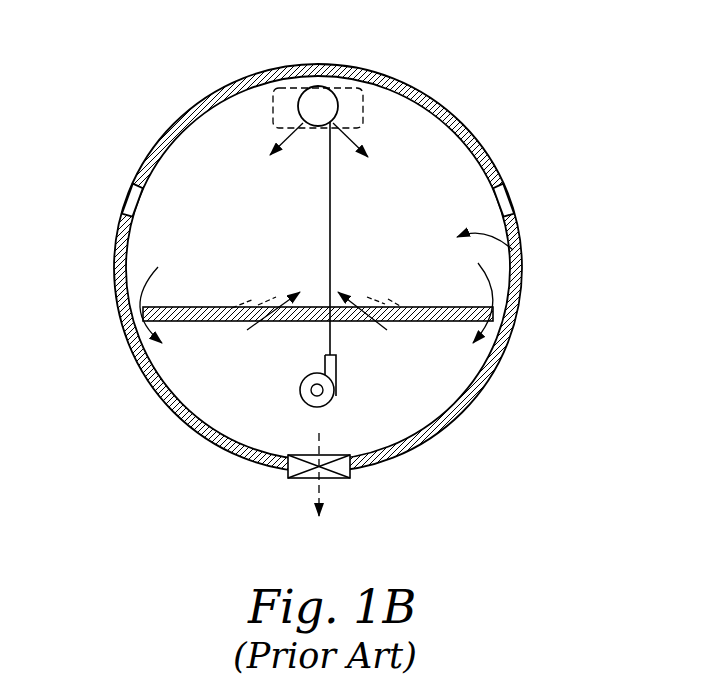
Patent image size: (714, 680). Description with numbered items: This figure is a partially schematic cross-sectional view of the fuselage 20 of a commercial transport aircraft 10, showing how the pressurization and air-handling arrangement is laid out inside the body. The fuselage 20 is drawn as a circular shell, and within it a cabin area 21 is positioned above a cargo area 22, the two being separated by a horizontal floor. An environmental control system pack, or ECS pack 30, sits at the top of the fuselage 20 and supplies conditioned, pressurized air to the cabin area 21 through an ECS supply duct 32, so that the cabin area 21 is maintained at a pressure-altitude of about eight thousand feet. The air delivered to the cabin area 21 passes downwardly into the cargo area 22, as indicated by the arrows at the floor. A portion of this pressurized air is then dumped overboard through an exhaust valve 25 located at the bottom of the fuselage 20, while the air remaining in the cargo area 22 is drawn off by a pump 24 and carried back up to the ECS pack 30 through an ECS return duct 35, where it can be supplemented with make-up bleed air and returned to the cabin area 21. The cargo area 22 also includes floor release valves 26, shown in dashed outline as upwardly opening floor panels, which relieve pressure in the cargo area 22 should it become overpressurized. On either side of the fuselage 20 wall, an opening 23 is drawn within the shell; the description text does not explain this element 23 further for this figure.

The aircraft 10 is at (92, 103).
The fuselage 20 is at (453, 113).
The cabin area 21 is at (513, 248).
The cargo area 22 is at (222, 396).
The window opening 23 is at (505, 200).
The pump 24 is at (338, 390).
The exhaust valve 25 is at (337, 480).
The floor release valves 26 is at (263, 292).
The environmental control system (ECS) pack 30 is at (272, 106).
The ECS supply duct 32 is at (340, 98).
The ECS return duct 35 is at (331, 218).